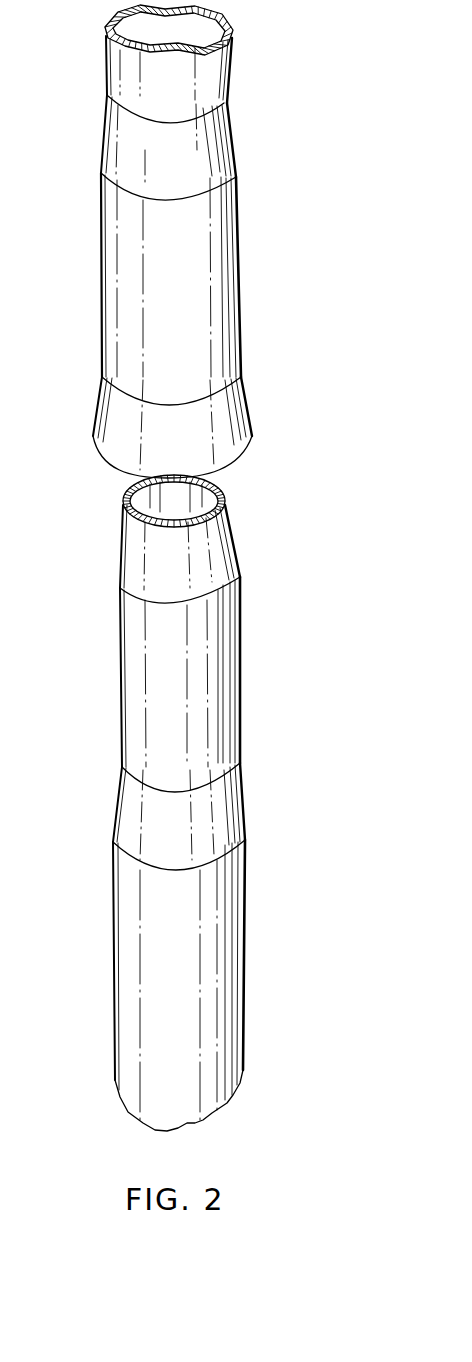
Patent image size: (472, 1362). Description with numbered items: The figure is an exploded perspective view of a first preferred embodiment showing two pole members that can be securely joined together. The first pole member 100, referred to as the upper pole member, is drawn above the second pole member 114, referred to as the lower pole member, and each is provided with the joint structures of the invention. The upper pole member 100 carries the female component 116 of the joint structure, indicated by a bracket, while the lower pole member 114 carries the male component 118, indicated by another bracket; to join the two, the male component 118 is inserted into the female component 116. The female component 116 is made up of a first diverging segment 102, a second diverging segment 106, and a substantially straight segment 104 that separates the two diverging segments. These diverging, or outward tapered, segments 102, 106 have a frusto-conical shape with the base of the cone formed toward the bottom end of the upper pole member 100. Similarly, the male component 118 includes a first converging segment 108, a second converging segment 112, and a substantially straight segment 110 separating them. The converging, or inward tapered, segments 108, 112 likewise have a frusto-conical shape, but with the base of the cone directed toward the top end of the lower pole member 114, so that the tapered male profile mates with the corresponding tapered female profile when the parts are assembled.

The first pole member 100 is at (220, 60).
The first diverging segment 102 is at (253, 87).
The substantially straight segment 104 is at (253, 365).
The second diverging segment 106 is at (253, 365).
The first converging segment 108 is at (240, 490).
The substantially straight segment 110 is at (250, 750).
The second converging segment 112 is at (248, 750).
The second pole member 114 is at (215, 955).
The female component 116 is at (83, 443).
The male component 118 is at (117, 502).